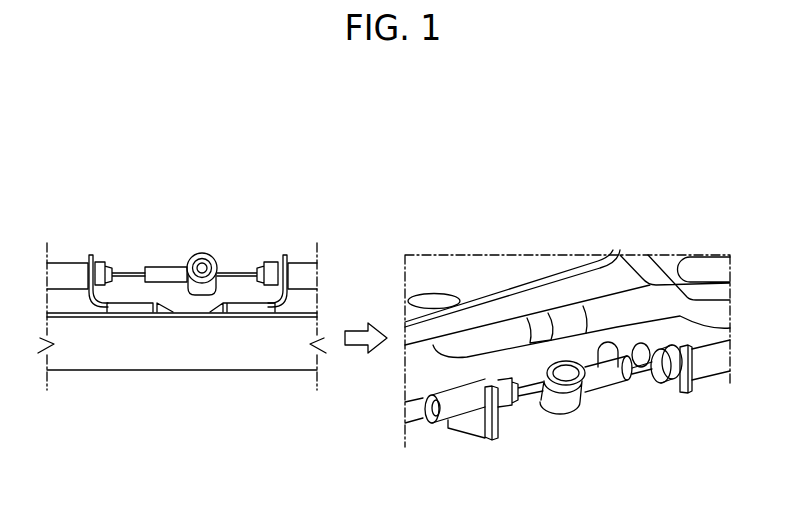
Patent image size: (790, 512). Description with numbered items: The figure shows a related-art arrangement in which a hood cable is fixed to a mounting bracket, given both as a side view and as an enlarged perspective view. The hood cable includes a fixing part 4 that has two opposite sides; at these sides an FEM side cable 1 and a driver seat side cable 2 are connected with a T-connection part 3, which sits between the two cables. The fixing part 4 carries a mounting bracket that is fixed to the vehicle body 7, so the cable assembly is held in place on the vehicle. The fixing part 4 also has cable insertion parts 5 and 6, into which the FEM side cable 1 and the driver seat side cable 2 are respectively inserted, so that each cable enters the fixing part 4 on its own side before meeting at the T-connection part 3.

The FEM side cable 1 is at (67, 268).
The driver seat side cable 2 is at (305, 268).
The T-connection part 3 is at (160, 272).
The fixing part 4 is at (242, 312).
The cable insertion portion 5 is at (84, 304).
The cable insertion portion 6 is at (298, 306).
The vehicle body 7 is at (172, 350).